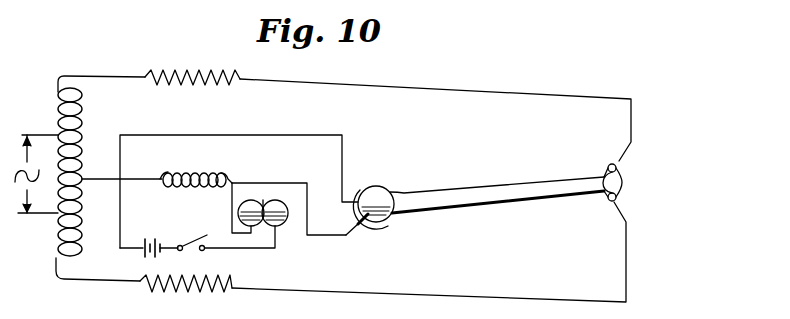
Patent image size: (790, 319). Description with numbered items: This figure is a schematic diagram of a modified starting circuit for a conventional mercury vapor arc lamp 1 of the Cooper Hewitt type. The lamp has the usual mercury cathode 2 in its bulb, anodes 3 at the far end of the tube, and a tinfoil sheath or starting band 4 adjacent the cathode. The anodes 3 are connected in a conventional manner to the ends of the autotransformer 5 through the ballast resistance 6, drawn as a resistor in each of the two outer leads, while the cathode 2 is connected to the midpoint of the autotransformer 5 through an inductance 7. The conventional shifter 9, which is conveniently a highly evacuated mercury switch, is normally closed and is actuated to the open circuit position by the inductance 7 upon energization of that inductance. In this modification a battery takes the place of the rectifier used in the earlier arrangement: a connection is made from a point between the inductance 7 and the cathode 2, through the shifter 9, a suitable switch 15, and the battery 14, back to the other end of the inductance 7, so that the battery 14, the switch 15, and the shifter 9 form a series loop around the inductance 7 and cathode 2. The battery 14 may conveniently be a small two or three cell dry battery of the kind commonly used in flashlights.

The mercury vapor arc lamp 1 is at (501, 192).
The mercury cathode 2 is at (378, 196).
The anodes 3 is at (618, 194).
The starting band 4 is at (387, 226).
The autotransformer 5 is at (58, 105).
The ballast resistance 6 is at (223, 79).
The inductance 7 is at (187, 175).
The shifter 9 is at (287, 218).
The battery 14 is at (149, 241).
The switch 15 is at (184, 252).